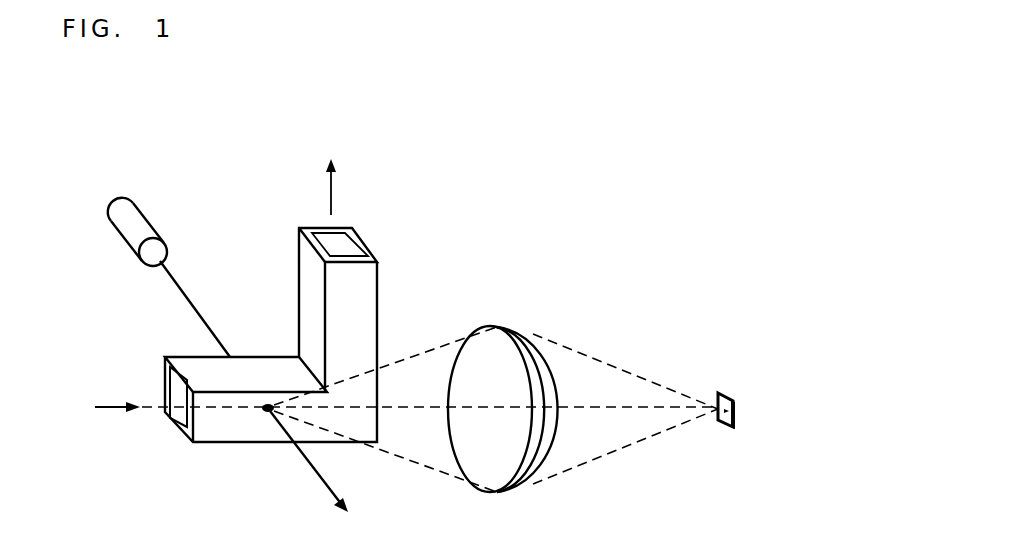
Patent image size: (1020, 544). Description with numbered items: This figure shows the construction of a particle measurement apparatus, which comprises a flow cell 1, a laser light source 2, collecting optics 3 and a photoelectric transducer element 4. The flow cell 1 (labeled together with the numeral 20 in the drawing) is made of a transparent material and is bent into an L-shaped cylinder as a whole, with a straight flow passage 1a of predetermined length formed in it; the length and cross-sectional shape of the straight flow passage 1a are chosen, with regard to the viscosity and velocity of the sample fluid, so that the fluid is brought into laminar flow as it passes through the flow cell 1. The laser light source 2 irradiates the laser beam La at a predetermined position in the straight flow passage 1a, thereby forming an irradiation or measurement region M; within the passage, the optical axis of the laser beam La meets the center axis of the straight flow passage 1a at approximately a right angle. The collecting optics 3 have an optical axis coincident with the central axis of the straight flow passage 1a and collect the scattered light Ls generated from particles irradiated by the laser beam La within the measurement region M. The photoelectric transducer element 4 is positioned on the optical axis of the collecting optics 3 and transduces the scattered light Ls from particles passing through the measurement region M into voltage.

The flow cell 1 is at (320, 300).
The flow cell 20 is at (356, 232).
The straight flow passage 1a is at (380, 446).
The laser light source 2 is at (132, 218).
The collecting optics 3 is at (497, 327).
The photoelectric transducer element 4 is at (728, 342).
The laser beam La is at (200, 313).
The measurement region M is at (266, 405).
The scattered light Ls is at (396, 362).